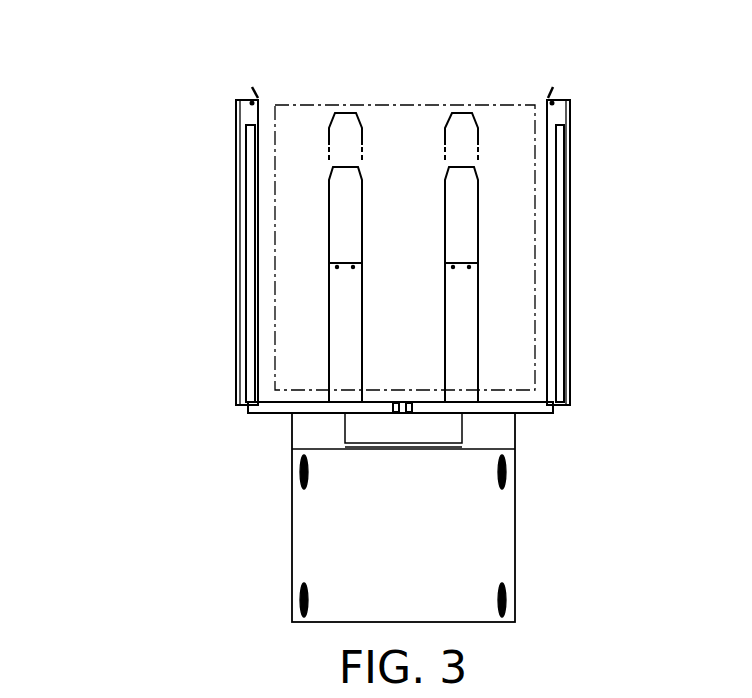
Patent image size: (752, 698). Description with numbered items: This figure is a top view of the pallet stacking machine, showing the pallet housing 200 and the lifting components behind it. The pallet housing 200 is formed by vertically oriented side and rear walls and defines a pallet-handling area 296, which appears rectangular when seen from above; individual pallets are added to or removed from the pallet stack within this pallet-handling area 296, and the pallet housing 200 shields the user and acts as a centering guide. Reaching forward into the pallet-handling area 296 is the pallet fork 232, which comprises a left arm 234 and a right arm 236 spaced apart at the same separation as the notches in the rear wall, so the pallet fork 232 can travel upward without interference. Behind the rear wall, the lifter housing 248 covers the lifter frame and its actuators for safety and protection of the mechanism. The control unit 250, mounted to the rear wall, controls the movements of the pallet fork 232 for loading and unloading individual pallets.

The pallet housing 200 is at (178, 130).
The pallet fork 232 is at (397, 235).
The left arm 234 is at (473, 328).
The right arm 236 is at (337, 357).
The lifter housing 248 is at (502, 540).
The control unit 250 is at (452, 425).
The pallet-handling area 296 is at (505, 105).